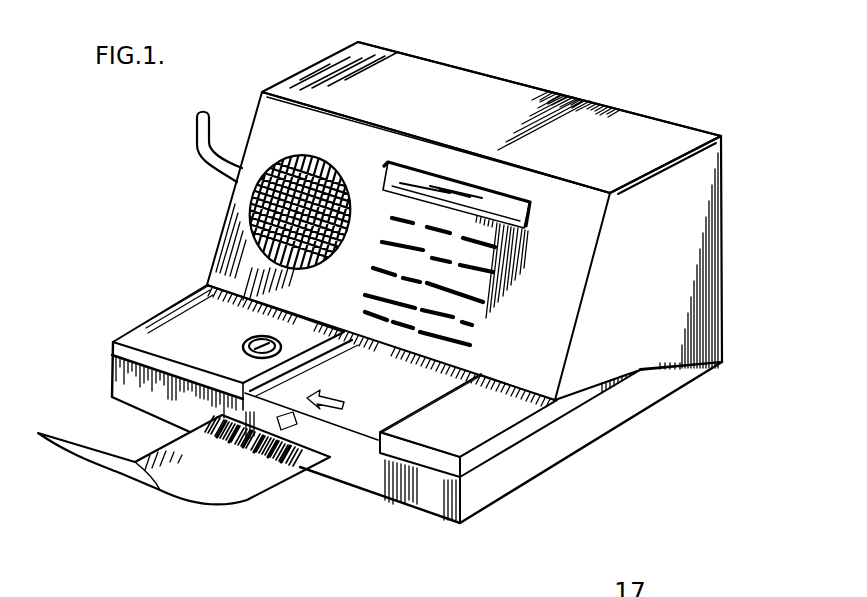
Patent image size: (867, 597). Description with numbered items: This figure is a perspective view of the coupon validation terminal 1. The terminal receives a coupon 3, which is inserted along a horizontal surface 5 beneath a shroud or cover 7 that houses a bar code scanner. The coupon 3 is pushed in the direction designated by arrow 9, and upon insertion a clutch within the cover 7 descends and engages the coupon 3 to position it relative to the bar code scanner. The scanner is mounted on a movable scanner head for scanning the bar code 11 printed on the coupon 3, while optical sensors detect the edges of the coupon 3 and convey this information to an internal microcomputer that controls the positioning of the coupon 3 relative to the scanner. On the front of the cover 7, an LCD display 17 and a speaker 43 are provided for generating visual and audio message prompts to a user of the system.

The coupon validation terminal 1 is at (698, 218).
The coupon 3 is at (232, 489).
The horizontal surface 5 is at (460, 366).
The shroud or cover 7 is at (580, 213).
The arrow 9 is at (330, 397).
The bar code 11 is at (297, 467).
The LCD display 17 is at (458, 188).
The speaker 43 is at (281, 158).